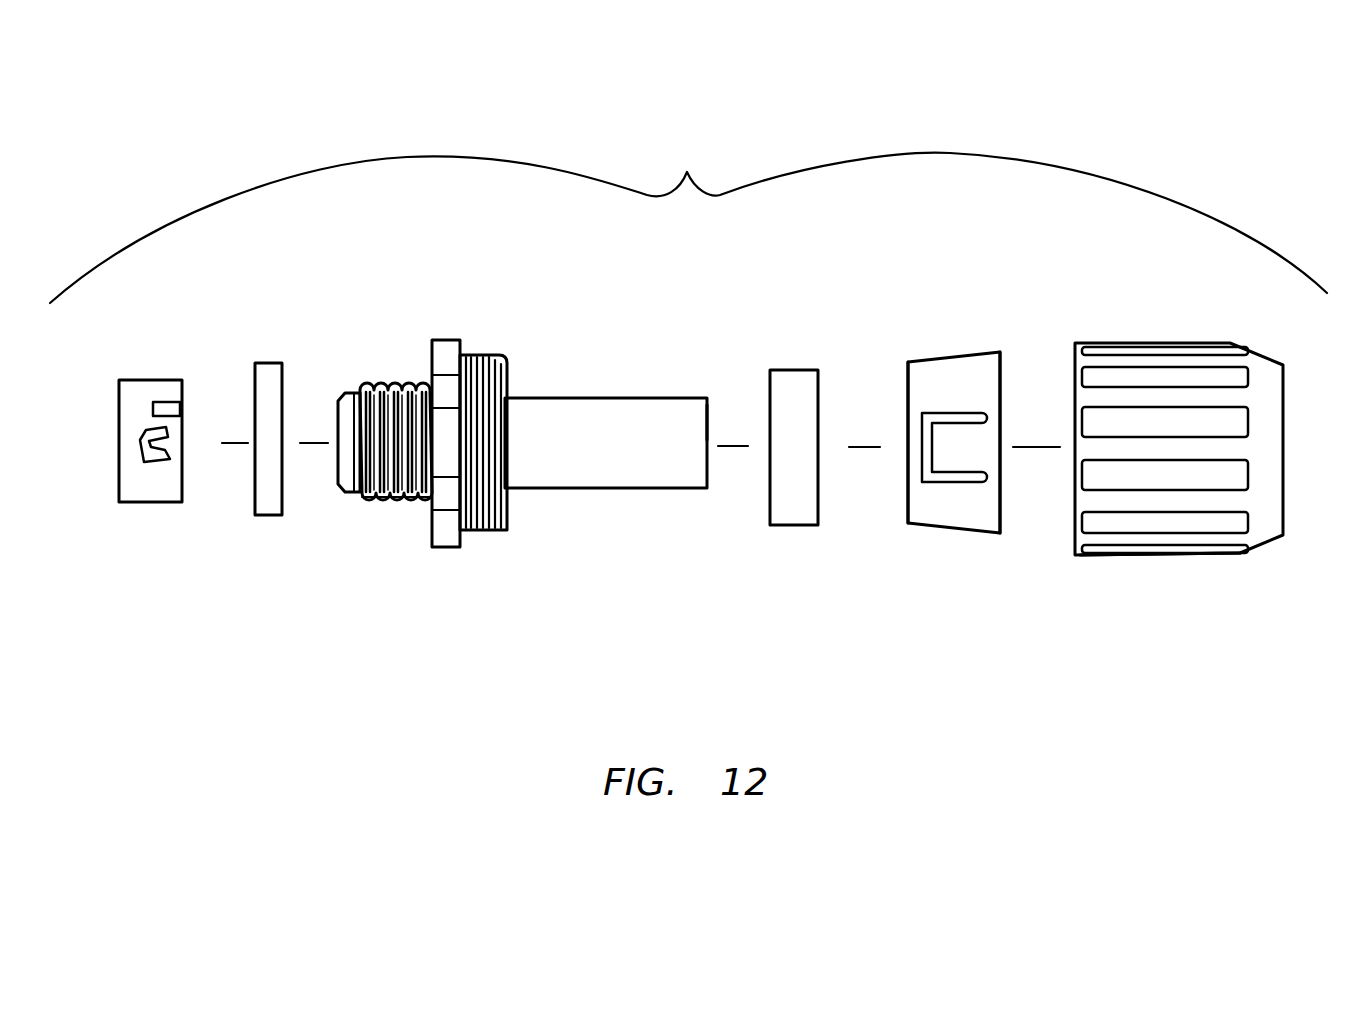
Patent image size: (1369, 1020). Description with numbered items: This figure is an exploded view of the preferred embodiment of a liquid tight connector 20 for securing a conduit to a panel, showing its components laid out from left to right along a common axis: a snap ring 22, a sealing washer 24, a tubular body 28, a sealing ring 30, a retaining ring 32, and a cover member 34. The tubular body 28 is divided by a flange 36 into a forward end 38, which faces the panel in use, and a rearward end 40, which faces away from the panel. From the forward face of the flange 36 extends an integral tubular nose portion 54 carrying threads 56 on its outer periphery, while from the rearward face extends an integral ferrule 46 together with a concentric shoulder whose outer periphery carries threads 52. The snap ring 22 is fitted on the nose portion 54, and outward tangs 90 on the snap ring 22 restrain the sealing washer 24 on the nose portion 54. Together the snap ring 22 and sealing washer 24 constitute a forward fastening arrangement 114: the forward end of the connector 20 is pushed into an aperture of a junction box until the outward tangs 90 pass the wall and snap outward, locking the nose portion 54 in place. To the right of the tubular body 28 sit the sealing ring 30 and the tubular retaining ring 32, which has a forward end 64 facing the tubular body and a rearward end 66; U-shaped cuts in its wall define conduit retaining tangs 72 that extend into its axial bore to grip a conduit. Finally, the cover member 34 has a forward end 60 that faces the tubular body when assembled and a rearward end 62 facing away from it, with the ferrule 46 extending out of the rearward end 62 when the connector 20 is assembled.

The liquid tight connector 20 is at (687, 172).
The snap ring 22 is at (143, 380).
The sealing washer 24 is at (268, 363).
The tubular body 28 is at (580, 490).
The sealing ring 30 is at (797, 525).
The retaining ring 32 is at (963, 562).
The cover member 34 is at (1178, 557).
The flange 36 is at (448, 340).
The forward end 38 is at (340, 413).
The rearward end 40 is at (707, 423).
The ferrule 46 is at (633, 448).
The threads 52 is at (489, 373).
The tubular nose portion 54 is at (378, 383).
The threads 56 is at (398, 500).
The forward end 60 is at (1072, 503).
The rearward end 62 is at (1283, 435).
The forward end 64 is at (908, 410).
The rearward end 66 is at (1000, 402).
The conduit retaining tangs 72 is at (973, 461).
The outward tangs 90 is at (158, 441).
The forward fastening arrangement 114 is at (290, 543).